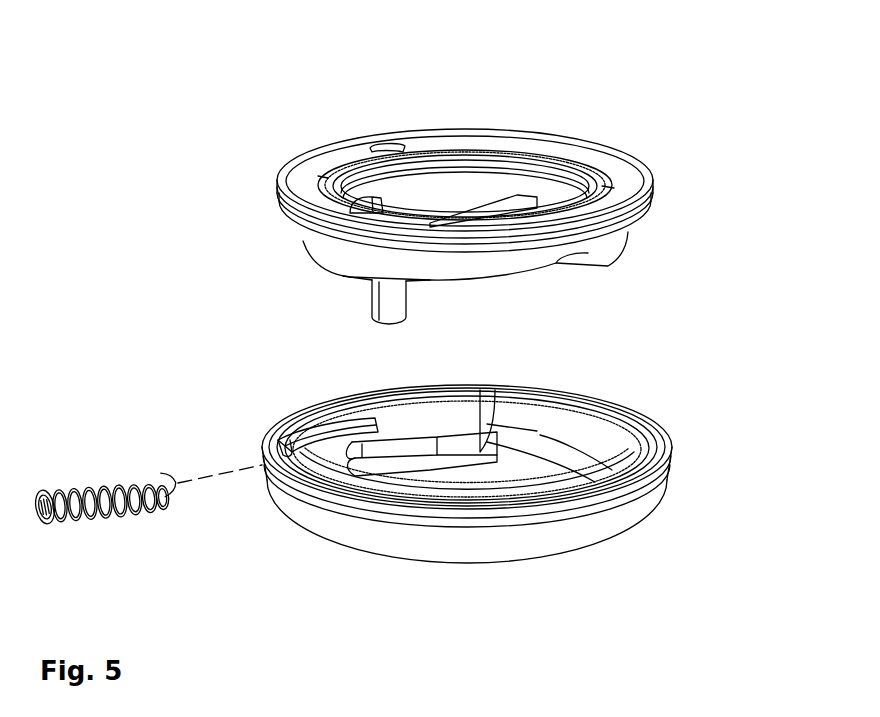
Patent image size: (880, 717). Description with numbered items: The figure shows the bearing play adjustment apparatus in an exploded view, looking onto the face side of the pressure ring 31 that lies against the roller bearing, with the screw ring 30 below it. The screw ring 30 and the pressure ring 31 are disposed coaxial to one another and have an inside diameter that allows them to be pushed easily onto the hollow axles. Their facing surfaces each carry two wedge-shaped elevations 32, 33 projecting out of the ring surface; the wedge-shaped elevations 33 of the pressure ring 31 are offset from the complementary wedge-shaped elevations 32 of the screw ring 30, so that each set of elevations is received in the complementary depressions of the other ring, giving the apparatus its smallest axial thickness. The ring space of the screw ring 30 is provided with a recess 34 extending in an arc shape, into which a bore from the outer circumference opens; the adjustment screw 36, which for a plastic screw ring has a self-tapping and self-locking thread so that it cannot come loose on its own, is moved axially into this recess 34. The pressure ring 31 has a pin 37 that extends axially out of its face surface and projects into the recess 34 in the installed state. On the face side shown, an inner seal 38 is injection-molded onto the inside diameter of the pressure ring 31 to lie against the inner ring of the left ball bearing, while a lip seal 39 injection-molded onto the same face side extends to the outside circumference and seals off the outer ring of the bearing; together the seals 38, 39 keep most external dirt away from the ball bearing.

The screw ring 30 is at (658, 423).
The pressure ring 31 is at (305, 243).
The wedge-shaped elevations 32 is at (540, 435).
The wedge-shaped elevations 33 is at (343, 277).
The recess 34 is at (422, 425).
The adjustment screw 36 is at (80, 478).
The pin 37 is at (378, 308).
The inner seal 38 is at (534, 153).
The lip seal 39 is at (302, 158).